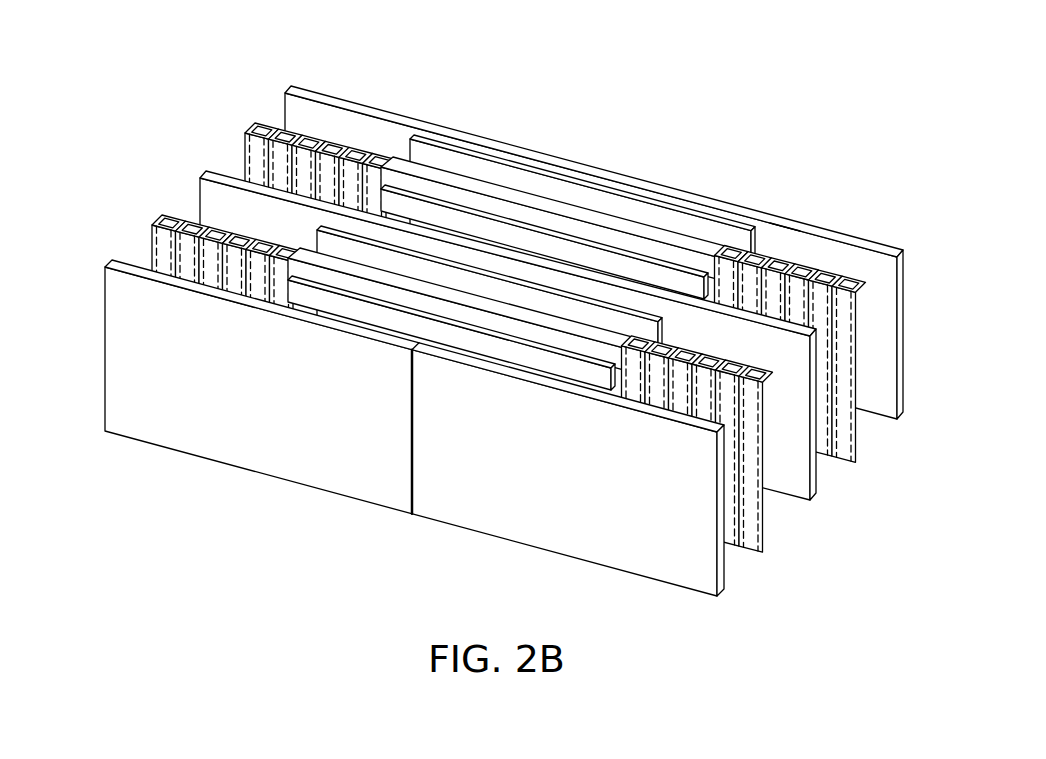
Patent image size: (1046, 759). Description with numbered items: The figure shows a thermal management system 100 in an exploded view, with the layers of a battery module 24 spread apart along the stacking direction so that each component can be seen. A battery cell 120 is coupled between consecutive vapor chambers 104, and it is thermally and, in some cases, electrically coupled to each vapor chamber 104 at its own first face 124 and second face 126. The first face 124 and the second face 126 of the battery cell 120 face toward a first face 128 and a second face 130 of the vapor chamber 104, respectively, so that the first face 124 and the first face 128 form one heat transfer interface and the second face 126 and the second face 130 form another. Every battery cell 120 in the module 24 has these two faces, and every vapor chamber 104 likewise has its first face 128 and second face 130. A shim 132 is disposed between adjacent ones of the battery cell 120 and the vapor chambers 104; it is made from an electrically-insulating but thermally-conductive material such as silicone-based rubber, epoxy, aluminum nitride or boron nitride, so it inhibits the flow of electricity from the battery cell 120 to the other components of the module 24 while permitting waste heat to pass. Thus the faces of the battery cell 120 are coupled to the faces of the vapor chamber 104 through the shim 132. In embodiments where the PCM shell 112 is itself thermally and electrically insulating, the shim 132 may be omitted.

The thermal management system 100 is at (131, 106).
The battery module 24 is at (778, 134).
The vapor chamber 104 is at (799, 477).
The PCM shell 112 is at (499, 365).
The battery cell 120 is at (666, 233).
The first face 124 is at (556, 204).
The second face 126 is at (606, 207).
The first face 128 is at (202, 176).
The second face 130 is at (785, 228).
The shim 132 is at (726, 232).